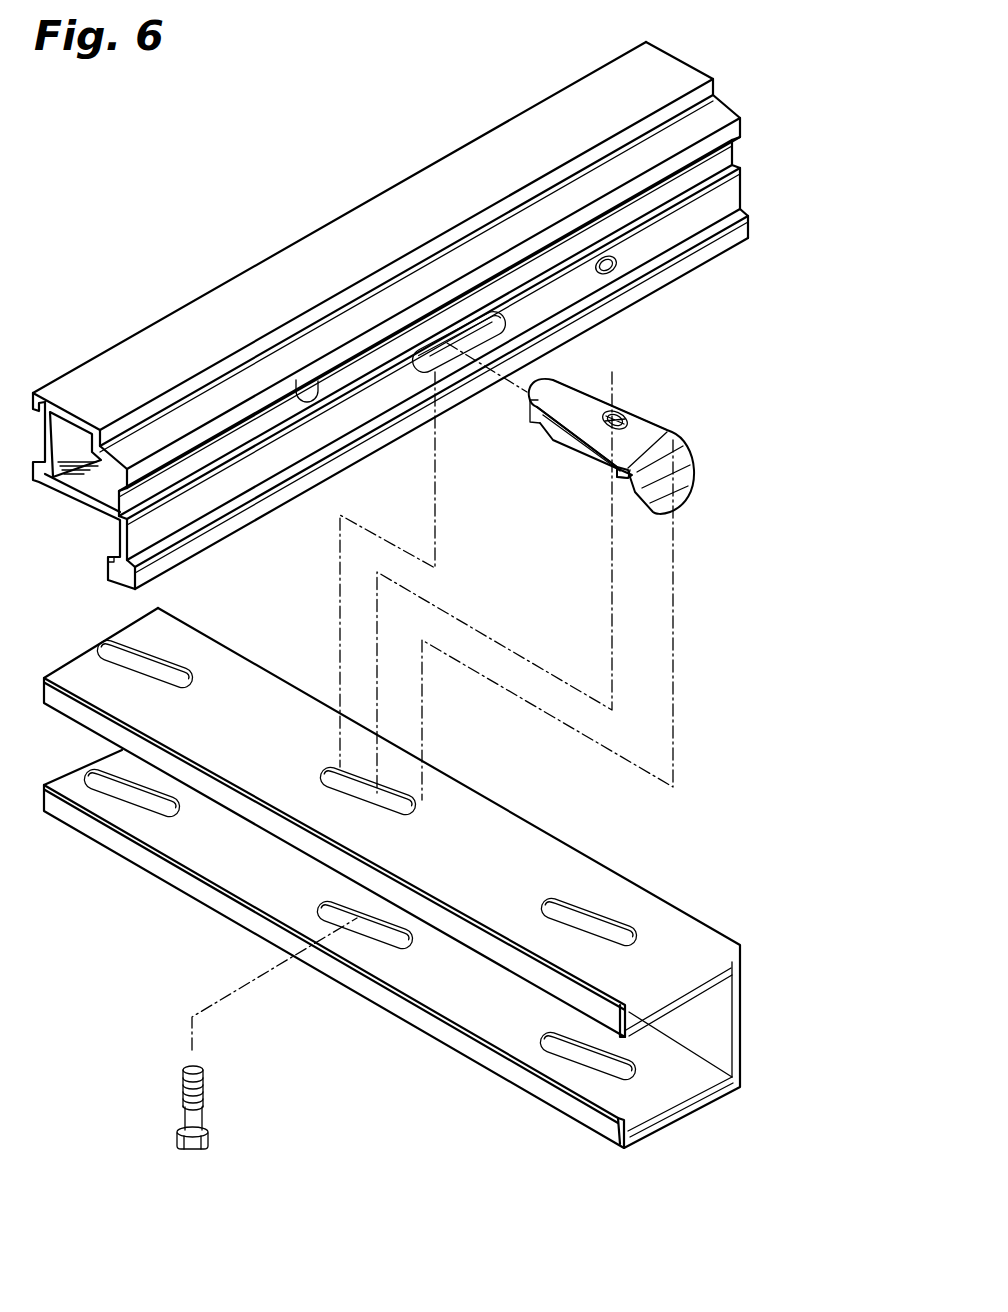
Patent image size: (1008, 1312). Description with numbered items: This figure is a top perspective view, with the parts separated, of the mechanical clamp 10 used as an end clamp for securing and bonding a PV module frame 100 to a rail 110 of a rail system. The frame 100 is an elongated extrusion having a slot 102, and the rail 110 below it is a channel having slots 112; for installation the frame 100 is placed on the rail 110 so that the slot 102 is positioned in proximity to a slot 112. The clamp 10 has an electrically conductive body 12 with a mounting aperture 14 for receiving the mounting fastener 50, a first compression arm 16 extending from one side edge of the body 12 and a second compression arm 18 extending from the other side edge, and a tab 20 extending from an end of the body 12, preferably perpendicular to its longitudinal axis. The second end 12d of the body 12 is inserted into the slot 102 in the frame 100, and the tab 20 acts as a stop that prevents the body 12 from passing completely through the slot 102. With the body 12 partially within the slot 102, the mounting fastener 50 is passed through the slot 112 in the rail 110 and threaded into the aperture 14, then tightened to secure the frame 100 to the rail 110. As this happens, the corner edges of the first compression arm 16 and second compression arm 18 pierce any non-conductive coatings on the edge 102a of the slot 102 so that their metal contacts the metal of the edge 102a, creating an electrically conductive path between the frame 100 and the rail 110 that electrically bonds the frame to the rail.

The mechanical clamp 10 is at (640, 444).
The electrically conductive body 12 is at (605, 447).
The second end 12d is at (537, 410).
The mounting aperture 14 is at (623, 418).
The first compression arm 16 is at (627, 394).
The second compression arm 18 is at (570, 459).
The tab 20 is at (702, 486).
The mounting fastener 50 is at (182, 1105).
The PV module frame 100 is at (390, 314).
The slot 102 is at (423, 362).
The edge 102a is at (447, 343).
The rail 110 is at (392, 884).
The slot 112 is at (123, 660).